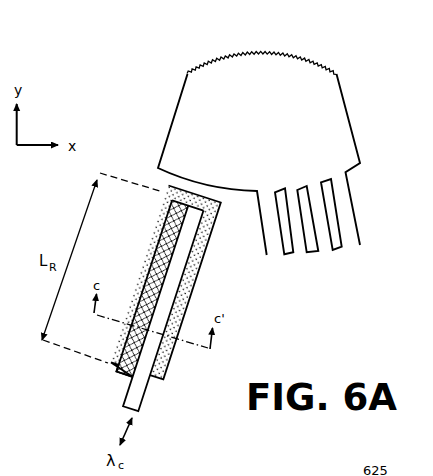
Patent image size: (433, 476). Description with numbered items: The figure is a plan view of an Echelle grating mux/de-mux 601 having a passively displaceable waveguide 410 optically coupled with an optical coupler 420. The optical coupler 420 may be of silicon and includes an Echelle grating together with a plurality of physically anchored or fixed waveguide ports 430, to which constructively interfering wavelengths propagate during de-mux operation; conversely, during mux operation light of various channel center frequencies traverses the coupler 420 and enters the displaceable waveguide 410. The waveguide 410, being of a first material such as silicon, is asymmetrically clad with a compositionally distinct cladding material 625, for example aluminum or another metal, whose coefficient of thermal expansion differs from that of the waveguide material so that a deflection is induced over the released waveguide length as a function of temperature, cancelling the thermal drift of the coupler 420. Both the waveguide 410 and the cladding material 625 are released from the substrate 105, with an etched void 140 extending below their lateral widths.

The Echelle grating mux/de-mux 601 is at (122, 60).
The substrate 105 is at (270, 340).
The optical coupler 420 is at (272, 131).
The fixed waveguide ports 430 is at (410, 267).
The etched void 140 is at (164, 192).
The cladding material 625 is at (151, 290).
The displaceable waveguide 410 is at (170, 322).